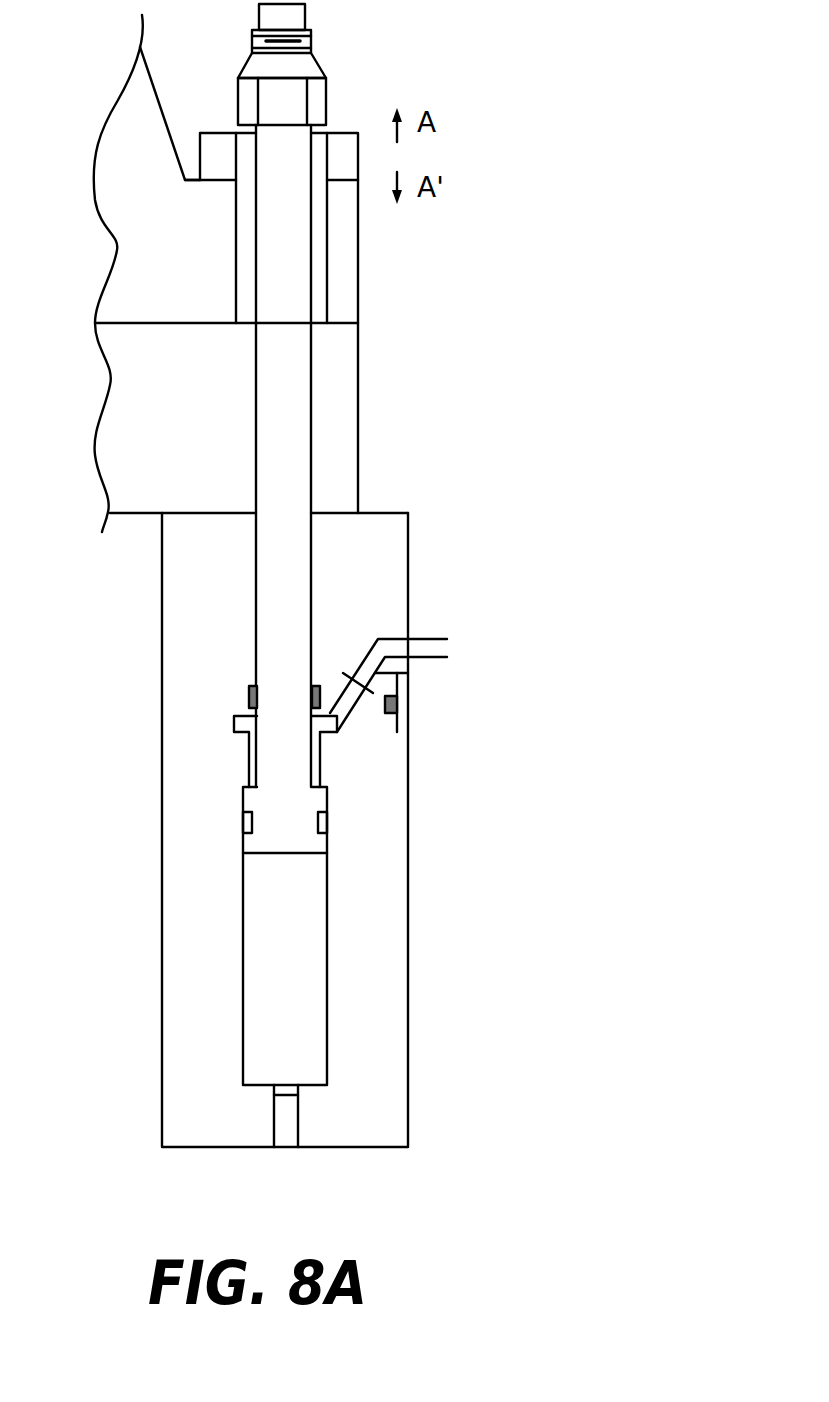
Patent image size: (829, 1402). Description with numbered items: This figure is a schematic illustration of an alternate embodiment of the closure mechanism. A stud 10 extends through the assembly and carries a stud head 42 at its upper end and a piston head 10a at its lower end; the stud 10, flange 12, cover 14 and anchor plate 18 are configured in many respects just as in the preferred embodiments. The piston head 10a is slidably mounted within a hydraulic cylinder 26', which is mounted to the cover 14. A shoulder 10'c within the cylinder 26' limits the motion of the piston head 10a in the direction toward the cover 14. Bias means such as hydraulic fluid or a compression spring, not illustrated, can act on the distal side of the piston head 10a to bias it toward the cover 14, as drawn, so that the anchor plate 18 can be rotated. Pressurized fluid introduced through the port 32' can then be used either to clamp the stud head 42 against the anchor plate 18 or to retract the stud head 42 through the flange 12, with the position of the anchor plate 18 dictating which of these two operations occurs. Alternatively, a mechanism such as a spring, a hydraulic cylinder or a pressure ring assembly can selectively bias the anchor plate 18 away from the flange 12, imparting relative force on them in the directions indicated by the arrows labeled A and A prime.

The stud 10 is at (339, 456).
The piston head 10a is at (252, 839).
The shoulder 10'c is at (254, 736).
The flange 12 is at (148, 190).
The cover 14 is at (190, 424).
The anchor plate 18 is at (213, 133).
The hydraulic cylinder 26' is at (251, 830).
The port 32' is at (417, 654).
The stud head 42 is at (326, 68).